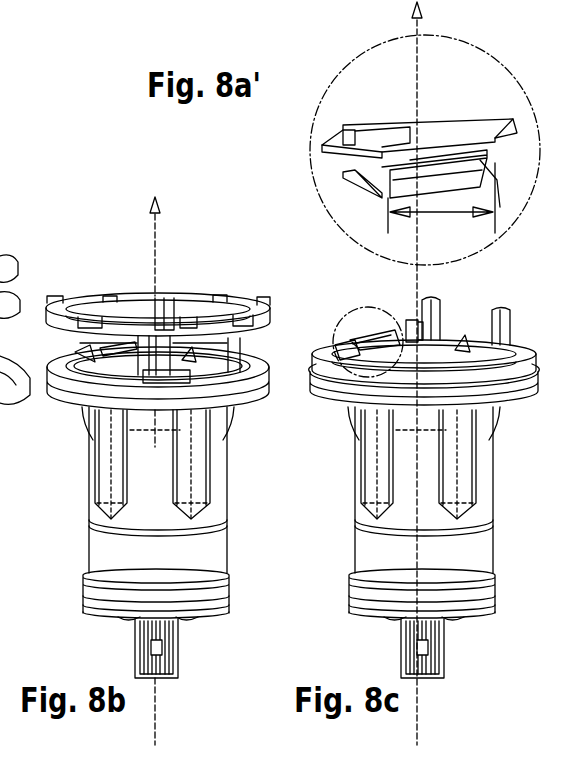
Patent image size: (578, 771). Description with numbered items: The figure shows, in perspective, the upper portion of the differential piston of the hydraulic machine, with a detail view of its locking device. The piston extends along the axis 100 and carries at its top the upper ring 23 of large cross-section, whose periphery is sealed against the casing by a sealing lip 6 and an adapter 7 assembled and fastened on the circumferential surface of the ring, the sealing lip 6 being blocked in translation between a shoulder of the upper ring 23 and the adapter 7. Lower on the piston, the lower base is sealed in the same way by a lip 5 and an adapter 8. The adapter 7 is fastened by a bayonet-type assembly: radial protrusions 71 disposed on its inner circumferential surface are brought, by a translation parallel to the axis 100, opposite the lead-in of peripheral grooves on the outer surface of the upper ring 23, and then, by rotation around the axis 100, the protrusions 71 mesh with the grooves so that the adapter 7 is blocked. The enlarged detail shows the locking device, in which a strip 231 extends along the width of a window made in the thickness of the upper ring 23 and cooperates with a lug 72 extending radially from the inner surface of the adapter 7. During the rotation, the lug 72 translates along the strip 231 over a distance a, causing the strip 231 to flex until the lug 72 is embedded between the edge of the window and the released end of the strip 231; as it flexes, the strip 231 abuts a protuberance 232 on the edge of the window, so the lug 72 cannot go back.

In FIG. 8A', the axis 100 is at (417, 58).
In FIG. 8B, the axis 100 is at (158, 242).
In FIG. 8A', the adapter 7 is at (444, 124).
In FIG. 8B, the adapter 7 is at (42, 318).
In FIG. 8C, the adapter 7 is at (324, 353).
In FIG. 8B, the radial protrusions 71 is at (112, 296).
In FIG. 8A', the lug 72 is at (400, 133).
In FIG. 8A', the upper ring 23 is at (336, 158).
In FIG. 8B, the upper ring 23 is at (76, 356).
In FIG. 8C, the upper ring 23 is at (478, 352).
In FIG. 8A', the strip 231 is at (479, 124).
In FIG. 8A', the protuberance 232 is at (500, 207).
In FIG. 8B, the sealing lip 6 is at (48, 392).
In FIG. 8C, the sealing lip 6 is at (310, 380).
In FIG. 8B, the lip 5 is at (83, 592).
In FIG. 8C, the lip 5 is at (396, 591).
In FIG. 8B, the adapter 8 is at (84, 600).
In FIG. 8C, the adapter 8 is at (398, 637).
In FIG. 8A', the distance a is at (441, 198).